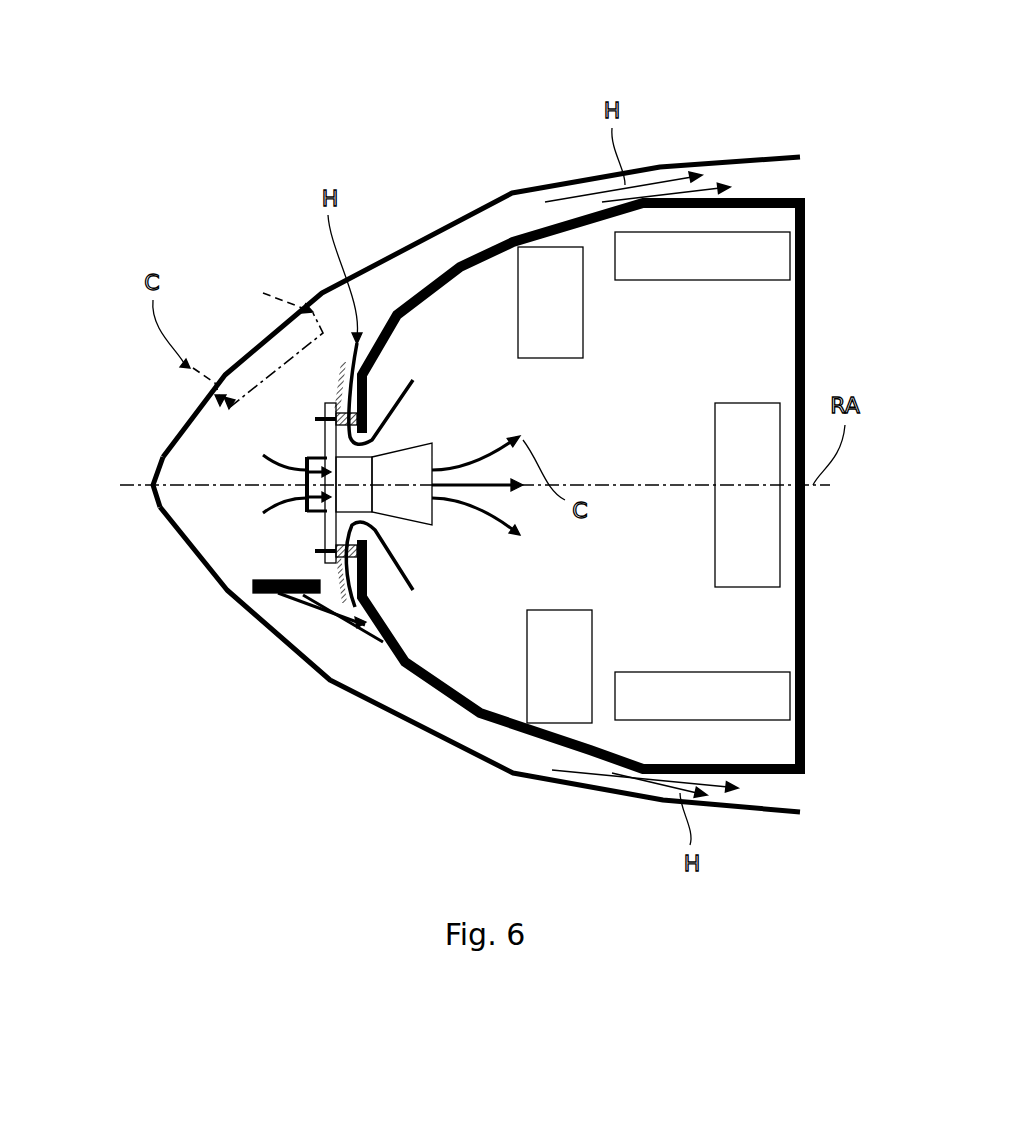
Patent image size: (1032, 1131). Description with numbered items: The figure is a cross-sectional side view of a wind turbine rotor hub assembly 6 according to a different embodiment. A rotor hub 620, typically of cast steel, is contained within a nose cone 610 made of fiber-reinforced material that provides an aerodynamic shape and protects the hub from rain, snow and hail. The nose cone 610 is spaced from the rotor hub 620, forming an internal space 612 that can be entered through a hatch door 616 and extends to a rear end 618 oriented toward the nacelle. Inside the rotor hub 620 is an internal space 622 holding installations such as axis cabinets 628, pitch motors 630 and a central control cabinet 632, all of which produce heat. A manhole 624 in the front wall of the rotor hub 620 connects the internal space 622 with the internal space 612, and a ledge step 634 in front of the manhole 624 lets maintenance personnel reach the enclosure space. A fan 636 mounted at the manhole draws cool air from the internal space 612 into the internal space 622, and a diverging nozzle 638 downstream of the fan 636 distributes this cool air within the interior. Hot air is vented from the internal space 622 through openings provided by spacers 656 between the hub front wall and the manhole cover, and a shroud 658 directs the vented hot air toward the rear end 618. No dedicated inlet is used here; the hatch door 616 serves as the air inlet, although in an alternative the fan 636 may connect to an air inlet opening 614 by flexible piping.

The gas turbine engine 6 is at (446, 105).
The nose cone 610 is at (695, 163).
The internal space 612 is at (201, 466).
The air inlet opening 614 is at (133, 474).
The hatch door 616 is at (256, 357).
The rear end 618 is at (809, 171).
The rotor hub 620 is at (804, 299).
The internal space 622 is at (641, 388).
The manhole 624 is at (402, 431).
The axis cabinets 628 is at (682, 266).
The pitch motors 630 is at (529, 315).
The central control cabinet 632 is at (726, 541).
The ledge step 634 is at (273, 595).
The fan 636 is at (366, 513).
The diverging nozzle 638 is at (435, 513).
The spacers 656 is at (333, 550).
The shroud 658 is at (342, 602).